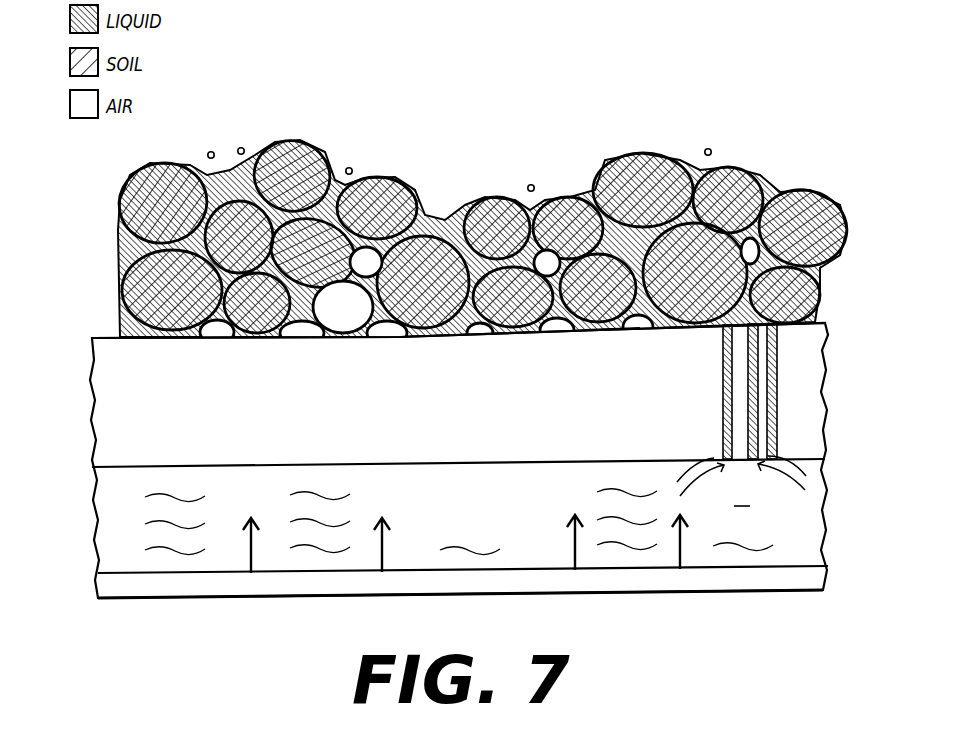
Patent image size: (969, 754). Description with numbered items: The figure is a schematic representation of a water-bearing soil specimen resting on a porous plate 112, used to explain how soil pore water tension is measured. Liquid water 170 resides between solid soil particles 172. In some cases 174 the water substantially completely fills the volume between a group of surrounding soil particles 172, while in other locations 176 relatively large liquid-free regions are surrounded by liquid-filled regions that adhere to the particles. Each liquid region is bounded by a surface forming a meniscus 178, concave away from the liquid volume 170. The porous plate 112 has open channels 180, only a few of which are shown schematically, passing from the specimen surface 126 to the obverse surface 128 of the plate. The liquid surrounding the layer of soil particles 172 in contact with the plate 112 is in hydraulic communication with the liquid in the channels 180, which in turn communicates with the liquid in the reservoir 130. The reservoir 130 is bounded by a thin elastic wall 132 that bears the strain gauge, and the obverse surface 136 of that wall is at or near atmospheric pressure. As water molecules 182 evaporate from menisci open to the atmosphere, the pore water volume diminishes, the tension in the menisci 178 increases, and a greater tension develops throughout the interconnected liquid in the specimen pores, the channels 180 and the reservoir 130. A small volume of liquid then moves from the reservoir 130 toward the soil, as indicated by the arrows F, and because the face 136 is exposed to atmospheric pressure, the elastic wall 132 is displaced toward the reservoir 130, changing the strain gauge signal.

The porous plate 112 is at (153, 413).
The specimen surface 126 is at (108, 331).
The obverse surface of the plate 128 is at (142, 469).
The reservoir 130 is at (486, 518).
The thin elastic wall 132 is at (777, 577).
The obverse surface of the elastic wall 136 is at (282, 600).
The liquid water 170 is at (483, 224).
The soil particles 172 is at (790, 210).
The liquid-filled region 174 is at (610, 331).
The liquid-free region 176 is at (412, 207).
The meniscus 178 is at (200, 162).
The open channels 180 is at (777, 380).
The water molecules 182 is at (711, 150).